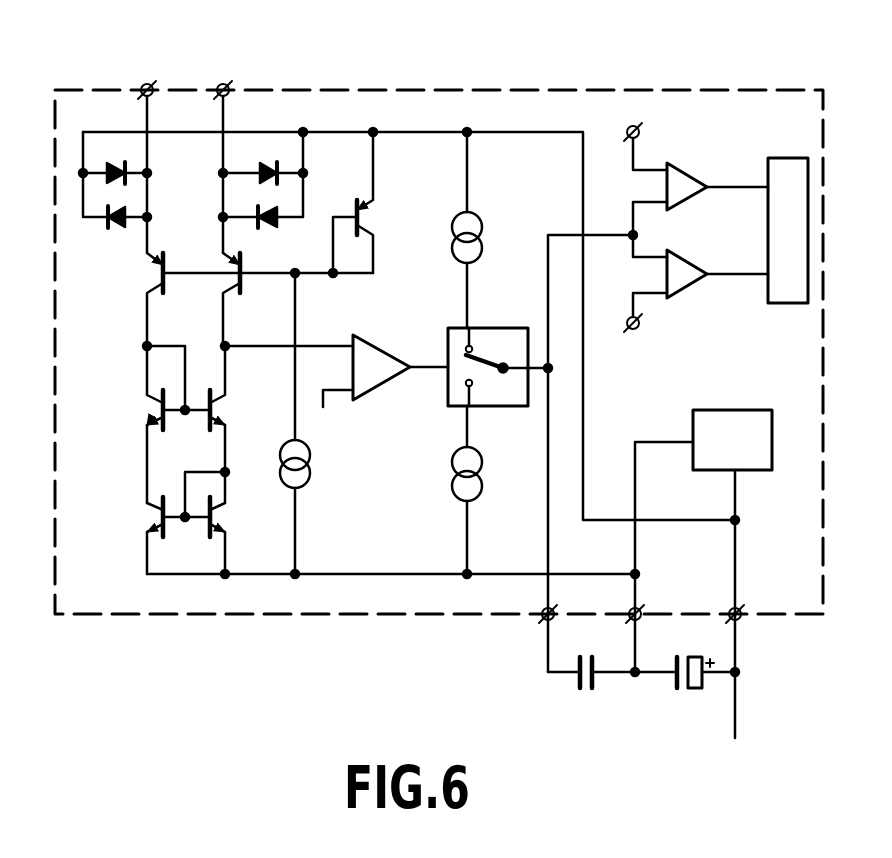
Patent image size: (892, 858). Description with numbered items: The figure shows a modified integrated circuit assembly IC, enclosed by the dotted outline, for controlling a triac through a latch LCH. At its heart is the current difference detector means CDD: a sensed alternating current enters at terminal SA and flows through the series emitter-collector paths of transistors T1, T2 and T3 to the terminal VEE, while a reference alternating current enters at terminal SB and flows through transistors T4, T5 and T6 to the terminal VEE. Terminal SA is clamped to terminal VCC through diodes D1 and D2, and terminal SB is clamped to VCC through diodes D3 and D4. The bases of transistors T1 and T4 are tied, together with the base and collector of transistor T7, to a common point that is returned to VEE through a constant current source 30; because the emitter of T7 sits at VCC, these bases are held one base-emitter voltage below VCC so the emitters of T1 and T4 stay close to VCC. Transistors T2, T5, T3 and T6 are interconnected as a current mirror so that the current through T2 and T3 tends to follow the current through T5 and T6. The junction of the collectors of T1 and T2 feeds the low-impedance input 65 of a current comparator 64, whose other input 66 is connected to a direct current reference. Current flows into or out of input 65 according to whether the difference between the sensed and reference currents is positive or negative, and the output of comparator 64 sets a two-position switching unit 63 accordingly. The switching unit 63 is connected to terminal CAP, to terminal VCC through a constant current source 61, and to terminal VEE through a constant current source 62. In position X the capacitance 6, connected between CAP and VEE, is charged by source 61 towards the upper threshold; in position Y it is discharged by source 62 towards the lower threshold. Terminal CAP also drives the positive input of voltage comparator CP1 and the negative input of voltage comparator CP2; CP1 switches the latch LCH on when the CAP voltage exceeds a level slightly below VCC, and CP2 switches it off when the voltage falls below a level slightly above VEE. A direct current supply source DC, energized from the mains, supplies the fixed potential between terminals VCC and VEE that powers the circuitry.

The capacitance 6 is at (578, 679).
The constant current source 30 is at (311, 472).
The constant current source 61 is at (483, 230).
The constant current source 62 is at (483, 458).
The two-position switching unit 63 is at (500, 338).
The current comparator 64 is at (380, 372).
The comparator input 65 is at (330, 343).
The comparator input 66 is at (340, 397).
The integrated circuit assembly IC is at (350, 84).
The terminal SB is at (147, 152).
The terminal SA is at (223, 152).
The diode D1 is at (267, 165).
The diode D2 is at (266, 227).
The diode D3 is at (120, 166).
The diode D4 is at (120, 228).
The transistor T1 is at (244, 282).
The transistor T2 is at (221, 412).
The transistor T3 is at (221, 519).
The transistor T4 is at (150, 277).
The transistor T5 is at (150, 412).
The transistor T6 is at (150, 518).
The transistor T7 is at (367, 217).
The current difference detector means CDD is at (207, 333).
The switching position X is at (464, 350).
The switching position Y is at (465, 387).
The voltage comparator CP1 is at (674, 180).
The voltage comparator CP2 is at (683, 280).
The latch LCH is at (790, 165).
The direct current supply source DC is at (703, 574).
The terminal CAP is at (542, 608).
The terminal VEE is at (637, 607).
The terminal VCC is at (731, 608).